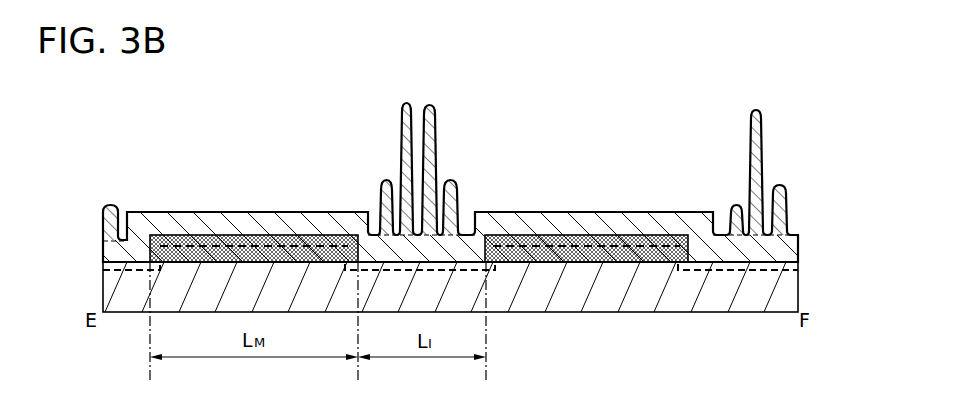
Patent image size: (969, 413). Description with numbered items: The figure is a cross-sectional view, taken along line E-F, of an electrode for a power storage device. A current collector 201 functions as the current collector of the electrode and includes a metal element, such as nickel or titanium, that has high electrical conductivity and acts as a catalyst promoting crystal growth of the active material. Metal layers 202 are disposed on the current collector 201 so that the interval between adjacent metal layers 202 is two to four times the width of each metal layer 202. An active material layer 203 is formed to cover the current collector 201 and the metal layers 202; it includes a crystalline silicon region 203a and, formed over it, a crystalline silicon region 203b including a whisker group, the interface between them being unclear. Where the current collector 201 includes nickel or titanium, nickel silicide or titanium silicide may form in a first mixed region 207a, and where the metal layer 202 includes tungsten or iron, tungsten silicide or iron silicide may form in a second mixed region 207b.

The current collector 201 is at (733, 302).
The metal layer 202 is at (598, 253).
The active material layer 203 is at (105, 103).
The crystalline silicon region 203a is at (798, 237).
The crystalline silicon region including a whisker group 203b is at (795, 105).
The first mixed region 207a is at (128, 263).
The second mixed region 207b is at (647, 237).